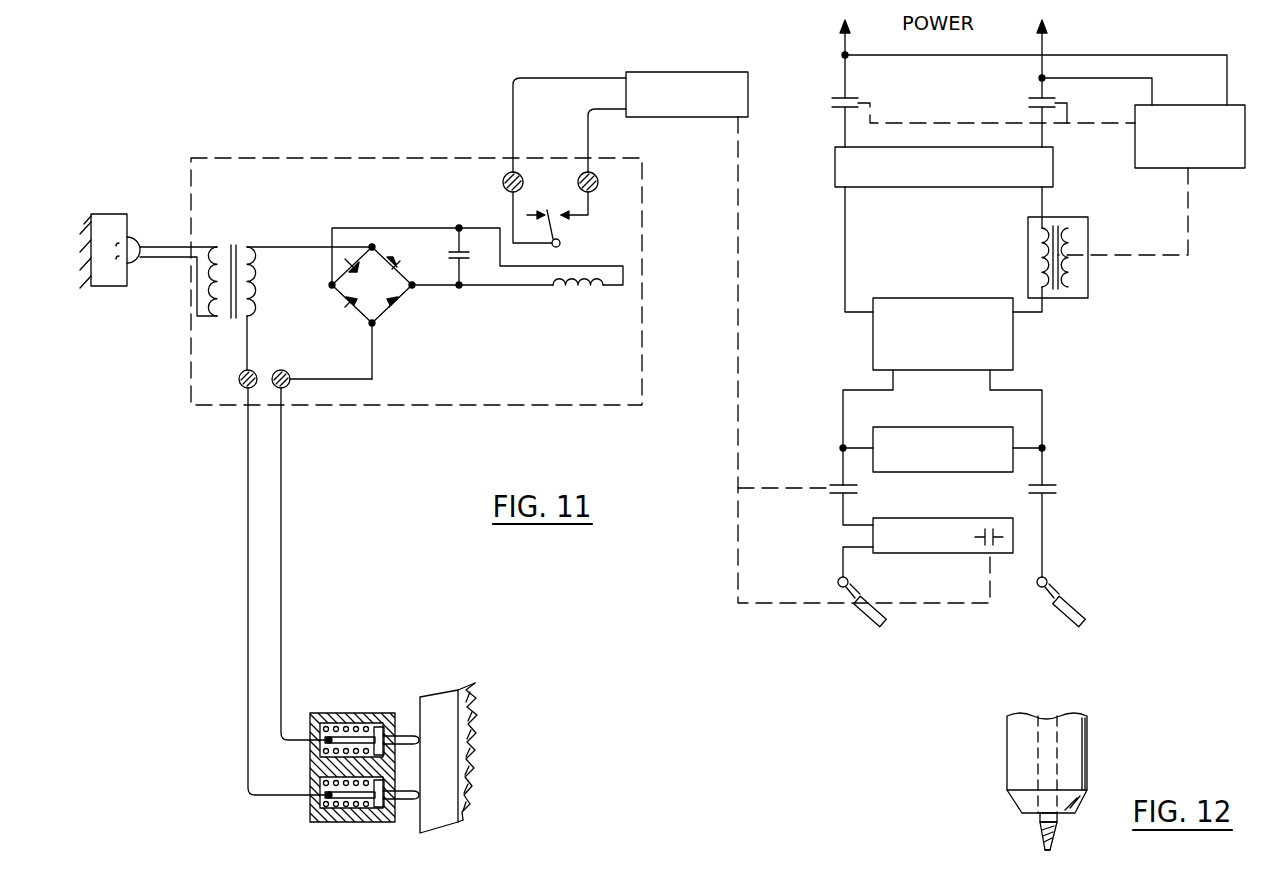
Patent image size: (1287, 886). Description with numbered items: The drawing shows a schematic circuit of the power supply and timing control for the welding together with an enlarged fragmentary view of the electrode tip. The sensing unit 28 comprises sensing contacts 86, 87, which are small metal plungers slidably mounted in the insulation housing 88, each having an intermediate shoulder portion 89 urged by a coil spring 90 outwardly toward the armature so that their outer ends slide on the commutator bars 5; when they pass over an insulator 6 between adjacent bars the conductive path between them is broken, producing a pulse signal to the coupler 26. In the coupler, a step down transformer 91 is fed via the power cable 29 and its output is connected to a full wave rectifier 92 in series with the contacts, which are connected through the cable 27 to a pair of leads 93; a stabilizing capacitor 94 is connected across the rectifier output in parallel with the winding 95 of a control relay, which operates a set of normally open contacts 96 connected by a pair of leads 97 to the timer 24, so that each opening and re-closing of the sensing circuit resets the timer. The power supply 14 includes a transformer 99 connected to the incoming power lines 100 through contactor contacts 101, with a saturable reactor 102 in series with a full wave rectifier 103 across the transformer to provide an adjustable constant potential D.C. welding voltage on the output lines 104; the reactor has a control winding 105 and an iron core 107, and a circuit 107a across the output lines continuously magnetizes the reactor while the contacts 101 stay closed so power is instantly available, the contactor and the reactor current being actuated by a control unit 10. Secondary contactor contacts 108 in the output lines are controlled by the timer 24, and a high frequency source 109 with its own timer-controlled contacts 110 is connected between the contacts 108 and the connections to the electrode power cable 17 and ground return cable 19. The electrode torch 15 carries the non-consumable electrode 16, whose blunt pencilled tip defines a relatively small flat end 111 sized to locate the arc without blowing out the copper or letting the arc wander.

In FIG. 11, the commutator bar 5 is at (440, 690).
In FIG. 11, the insulator 6 is at (464, 683).
In FIG. 12, the control unit 10 is at (1240, 157).
In FIG. 12, the power supply 14 is at (927, 280).
In FIG. 12, the electrode torch 15 is at (1078, 772).
In FIG. 12, the non-consumable electrode 16 is at (1058, 819).
In FIG. 12, the power cable 17 is at (862, 615).
In FIG. 12, the ground return cable 19 is at (1060, 615).
In FIG. 11, the timer 24 is at (653, 72).
In FIG. 11, the coupler 26 is at (409, 152).
In FIG. 11, the cable 27 is at (250, 515).
In FIG. 11, the connector 28 is at (350, 752).
In FIG. 11, the power cable 29 is at (157, 247).
In FIG. 11, the sensing contact 86 is at (410, 735).
In FIG. 11, the sensing contact 87 is at (408, 805).
In FIG. 11, the insulation housing 88 is at (310, 768).
In FIG. 11, the shoulder portion 89 is at (379, 722).
In FIG. 11, the coil spring 90 is at (330, 722).
In FIG. 11, the step down transformer 91 is at (232, 238).
In FIG. 11, the full wave rectifier 92 is at (362, 296).
In FIG. 11, the leads 93 is at (300, 370).
In FIG. 11, the stabilizing capacitor 94 is at (448, 259).
In FIG. 11, the winding 95 is at (572, 280).
In FIG. 11, the normally open contacts 96 is at (562, 228).
In FIG. 11, the leads 97 is at (543, 80).
In FIG. 12, the transformer 99 is at (1050, 176).
In FIG. 12, the power lines 100 is at (840, 42).
In FIG. 12, the contactor contacts 101 is at (863, 104).
In FIG. 12, the saturable reactor 102 is at (1077, 249).
In FIG. 12, the full wave rectifier 103 is at (1013, 342).
In FIG. 12, the output lines 104 is at (838, 578).
In FIG. 12, the control winding 105 is at (1068, 228).
In FIG. 12, the iron core 107 is at (1058, 250).
In FIG. 12, the circuit 107a is at (938, 427).
In FIG. 12, the contacts 108 is at (830, 487).
In FIG. 12, the high frequency source 109 is at (965, 554).
In FIG. 12, the contacts 110 is at (998, 531).
In FIG. 12, the flat end 111 is at (1049, 851).